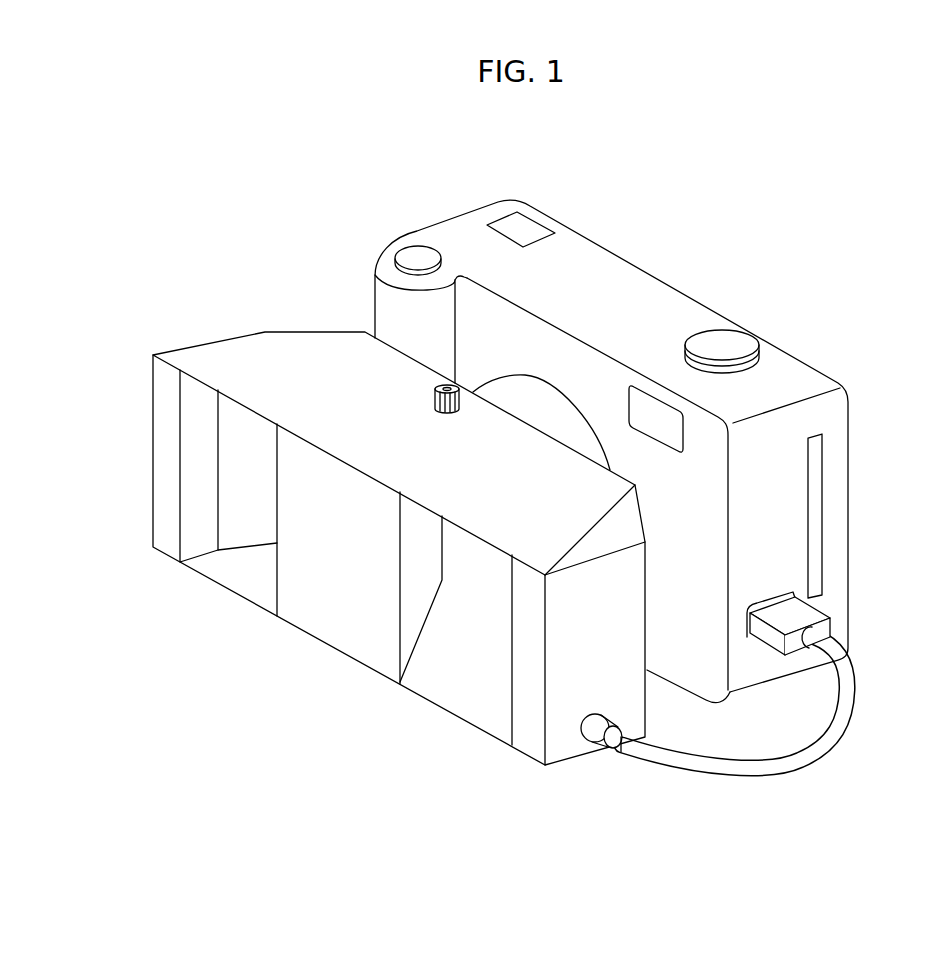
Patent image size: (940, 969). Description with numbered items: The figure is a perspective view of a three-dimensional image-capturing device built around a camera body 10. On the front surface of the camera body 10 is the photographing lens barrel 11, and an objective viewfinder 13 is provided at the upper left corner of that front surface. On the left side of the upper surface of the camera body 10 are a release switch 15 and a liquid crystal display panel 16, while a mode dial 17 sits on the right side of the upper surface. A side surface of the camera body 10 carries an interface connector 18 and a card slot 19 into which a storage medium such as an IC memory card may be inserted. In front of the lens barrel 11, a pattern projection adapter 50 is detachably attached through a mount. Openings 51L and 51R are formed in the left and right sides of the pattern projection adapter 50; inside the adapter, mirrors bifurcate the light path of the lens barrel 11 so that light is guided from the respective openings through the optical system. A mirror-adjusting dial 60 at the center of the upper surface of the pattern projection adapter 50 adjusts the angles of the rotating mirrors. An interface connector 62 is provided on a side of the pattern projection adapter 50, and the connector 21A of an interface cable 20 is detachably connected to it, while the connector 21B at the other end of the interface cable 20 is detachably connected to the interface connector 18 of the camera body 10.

The camera body 10 is at (680, 651).
The photographing lens barrel 11 is at (547, 407).
The viewfinder 13 is at (652, 445).
The release switch 15 is at (418, 258).
The liquid crystal display panel 16 is at (522, 230).
The mode dial 17 is at (723, 345).
The interface connector 18 is at (773, 600).
The card slot 19 is at (818, 470).
The interface cable 20 is at (767, 774).
The connector 21A is at (598, 736).
The connector 21B is at (828, 629).
The pattern projection adapter 50 is at (302, 362).
The right opening 51R is at (245, 567).
The left opening 51L is at (463, 685).
The mirror-adjusting dial 60 is at (434, 411).
The interface connector 62 is at (580, 733).